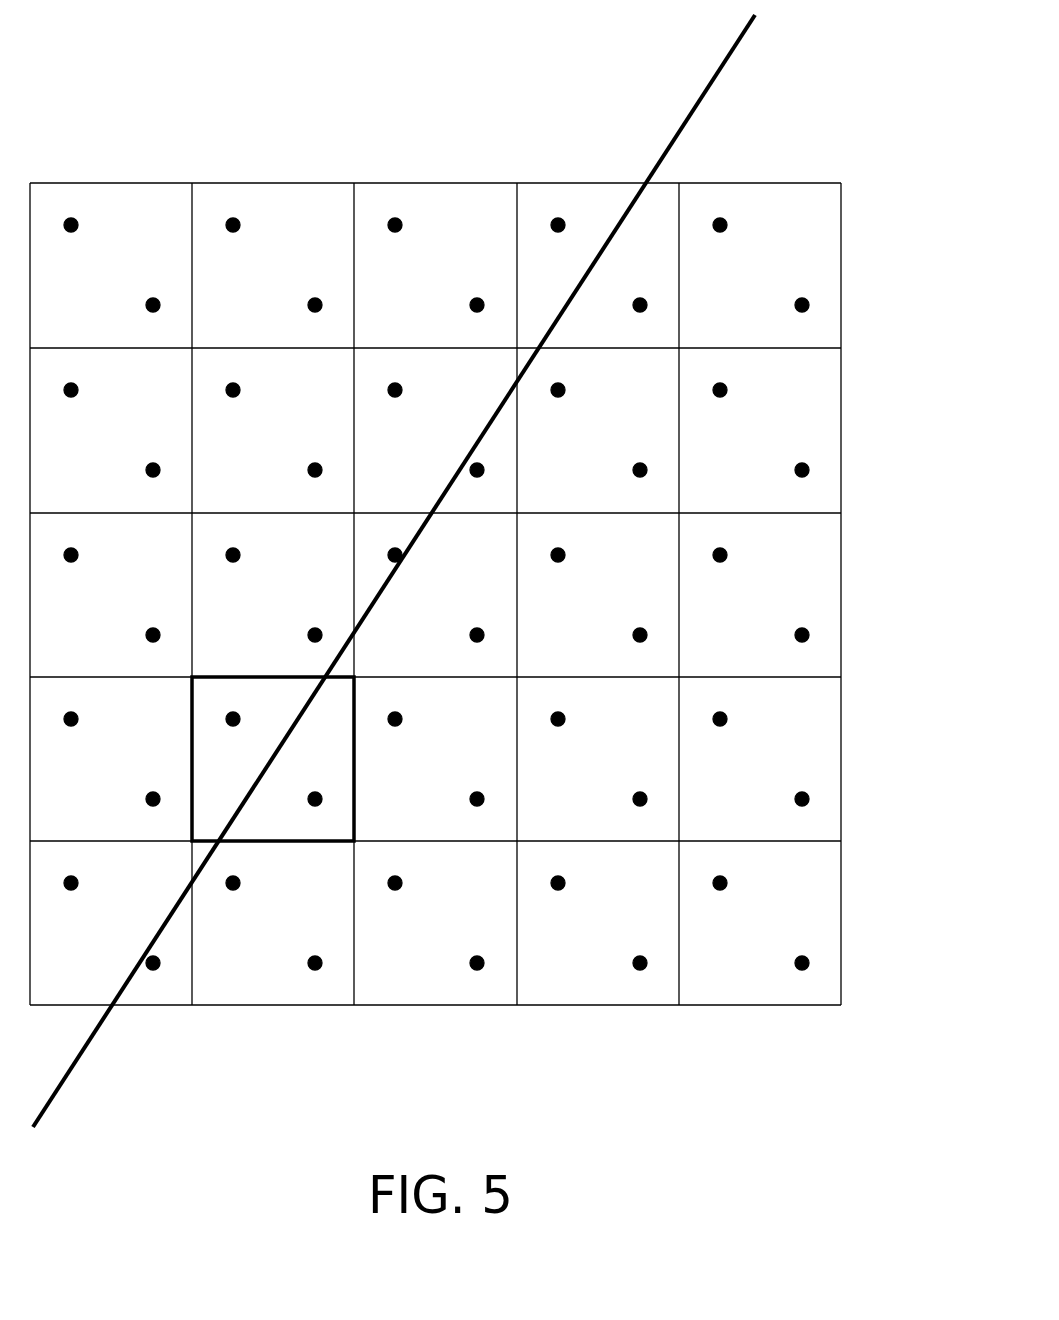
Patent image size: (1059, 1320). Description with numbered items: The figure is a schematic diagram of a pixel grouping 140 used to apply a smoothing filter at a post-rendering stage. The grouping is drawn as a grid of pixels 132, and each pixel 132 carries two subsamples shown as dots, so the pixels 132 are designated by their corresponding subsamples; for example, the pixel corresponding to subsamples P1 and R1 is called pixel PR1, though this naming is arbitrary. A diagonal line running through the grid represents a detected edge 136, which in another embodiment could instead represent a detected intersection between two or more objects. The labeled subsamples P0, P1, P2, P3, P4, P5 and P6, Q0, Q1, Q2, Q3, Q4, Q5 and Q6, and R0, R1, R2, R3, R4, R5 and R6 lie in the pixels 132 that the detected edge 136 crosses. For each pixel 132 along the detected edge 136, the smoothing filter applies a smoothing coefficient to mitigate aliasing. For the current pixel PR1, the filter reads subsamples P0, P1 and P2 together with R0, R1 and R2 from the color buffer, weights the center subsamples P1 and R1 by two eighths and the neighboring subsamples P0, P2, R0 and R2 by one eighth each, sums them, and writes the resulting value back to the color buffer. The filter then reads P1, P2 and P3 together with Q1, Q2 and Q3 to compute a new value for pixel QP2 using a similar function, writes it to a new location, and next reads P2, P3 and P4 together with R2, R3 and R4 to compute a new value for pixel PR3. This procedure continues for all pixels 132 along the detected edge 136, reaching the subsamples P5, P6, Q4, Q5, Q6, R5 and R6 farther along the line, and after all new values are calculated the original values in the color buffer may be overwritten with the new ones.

The pixel 132 is at (395, 183).
The detected edge 136 is at (692, 112).
The pixel grouping 140 is at (226, 74).
The subsample P0 is at (153, 784).
The subsample P1 is at (233, 704).
The subsample P2 is at (315, 620).
The subsample P3 is at (395, 540).
The subsample P4 is at (477, 483).
The subsample P5 is at (558, 403).
The subsample P6 is at (640, 318).
The subsample Q0 is at (71, 704).
The subsample Q1 is at (153, 620).
The subsample Q2 is at (233, 540).
The subsample Q3 is at (315, 455).
The subsample Q4 is at (395, 375).
The subsample Q5 is at (477, 290).
The subsample Q6 is at (558, 210).
The subsample R0 is at (232, 896).
The subsample R1 is at (314, 784).
The subsample R2 is at (394, 704).
The subsample R3 is at (476, 620).
The subsample R4 is at (557, 540).
The subsample R5 is at (639, 455).
The subsample R6 is at (719, 375).